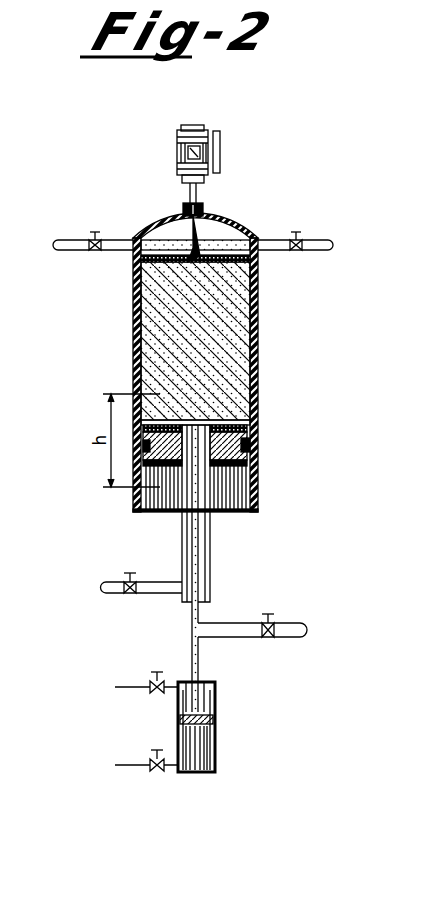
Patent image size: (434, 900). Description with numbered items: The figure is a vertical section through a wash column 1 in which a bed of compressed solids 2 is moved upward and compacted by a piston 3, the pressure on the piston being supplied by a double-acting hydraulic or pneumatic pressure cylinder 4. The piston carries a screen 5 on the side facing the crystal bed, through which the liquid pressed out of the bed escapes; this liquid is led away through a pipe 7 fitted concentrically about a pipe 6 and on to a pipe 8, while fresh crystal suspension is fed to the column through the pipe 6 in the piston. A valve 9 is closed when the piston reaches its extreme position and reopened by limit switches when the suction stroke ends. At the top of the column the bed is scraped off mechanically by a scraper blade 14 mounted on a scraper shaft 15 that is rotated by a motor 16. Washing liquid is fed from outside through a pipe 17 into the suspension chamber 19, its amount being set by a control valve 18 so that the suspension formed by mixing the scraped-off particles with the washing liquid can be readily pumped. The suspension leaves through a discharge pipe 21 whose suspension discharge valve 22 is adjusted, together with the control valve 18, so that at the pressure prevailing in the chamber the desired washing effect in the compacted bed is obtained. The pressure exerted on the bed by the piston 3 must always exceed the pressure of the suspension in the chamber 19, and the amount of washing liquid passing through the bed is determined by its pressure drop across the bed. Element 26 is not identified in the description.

The wash column 1 is at (258, 308).
The bed of compressed solids 2 is at (217, 337).
The piston 3 is at (238, 438).
The pressure cylinder 4 is at (197, 737).
The screen 5 is at (213, 420).
The pipe 6 is at (195, 557).
The pipe 7 is at (206, 530).
The pipe 8 is at (160, 595).
The valve 9 is at (130, 600).
The scraper blade 14 is at (260, 223).
The scraper shaft 15 is at (200, 188).
The motor 16 is at (218, 135).
The pipe 17 is at (322, 238).
The control valve 18 is at (307, 232).
The suspension chamber 19 is at (167, 222).
The discharge pipe 21 is at (70, 238).
The suspension discharge valve 22 is at (93, 238).
The distributor pipe 26 is at (148, 228).